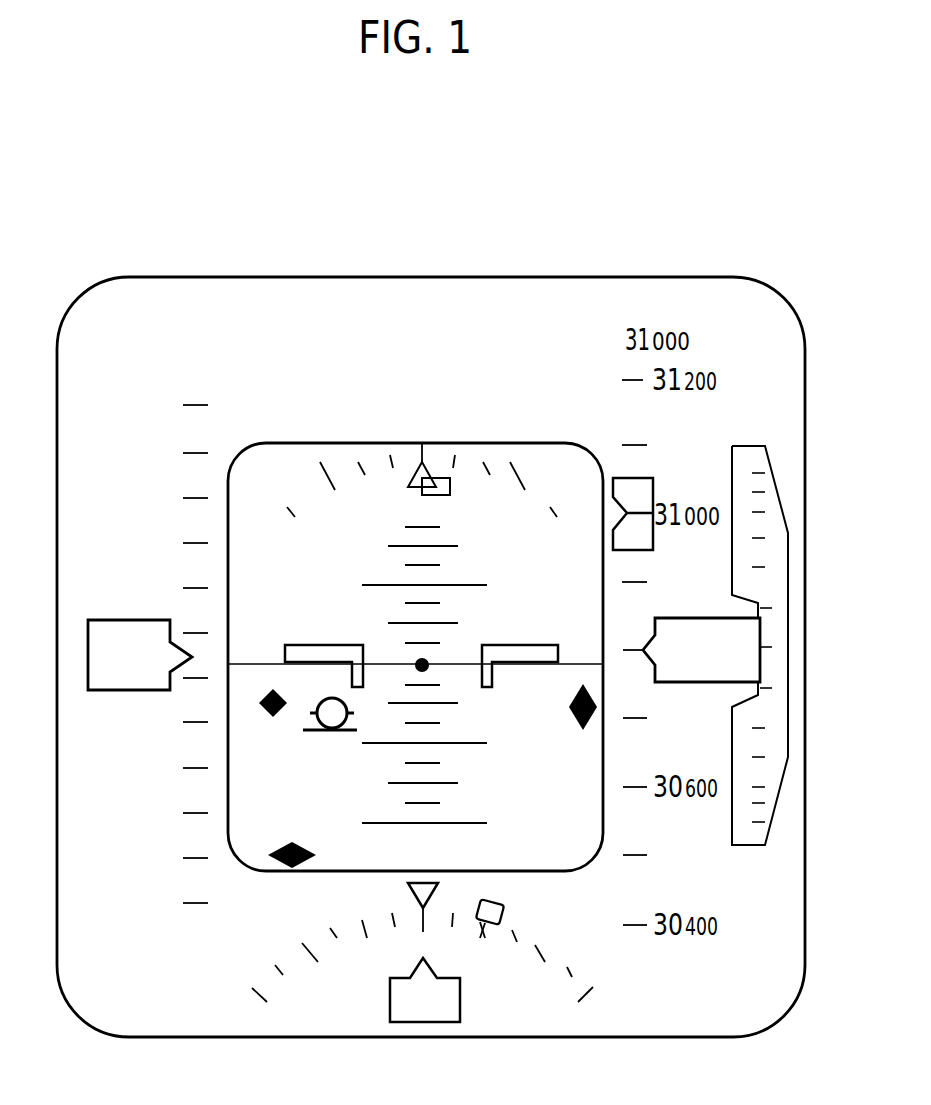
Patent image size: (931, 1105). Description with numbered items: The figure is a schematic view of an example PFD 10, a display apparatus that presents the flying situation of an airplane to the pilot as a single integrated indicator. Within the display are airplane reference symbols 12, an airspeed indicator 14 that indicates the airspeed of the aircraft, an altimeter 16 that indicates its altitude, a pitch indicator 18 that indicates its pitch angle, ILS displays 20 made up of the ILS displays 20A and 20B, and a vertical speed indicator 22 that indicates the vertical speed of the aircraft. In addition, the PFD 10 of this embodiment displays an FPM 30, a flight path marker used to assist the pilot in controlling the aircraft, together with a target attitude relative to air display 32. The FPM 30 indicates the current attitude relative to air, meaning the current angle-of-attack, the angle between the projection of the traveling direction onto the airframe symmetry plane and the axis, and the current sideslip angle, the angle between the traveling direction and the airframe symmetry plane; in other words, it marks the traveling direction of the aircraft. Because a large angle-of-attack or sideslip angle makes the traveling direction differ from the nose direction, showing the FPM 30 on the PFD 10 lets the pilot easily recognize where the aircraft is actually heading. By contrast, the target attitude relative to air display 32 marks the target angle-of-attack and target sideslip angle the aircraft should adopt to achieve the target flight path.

The PFD 10 is at (408, 196).
The airplane reference symbols 12 is at (302, 643).
The airspeed indicator 14 is at (110, 598).
The altimeter 16 is at (690, 600).
The pitch indicator 18 is at (338, 548).
The ILS displays 20 is at (468, 809).
The ILS display 20A is at (282, 868).
The ILS display 20B is at (588, 725).
The vertical speed indicator 22 is at (720, 445).
The flight path marker 30 is at (318, 732).
The target attitude relative to air display 32 is at (265, 717).